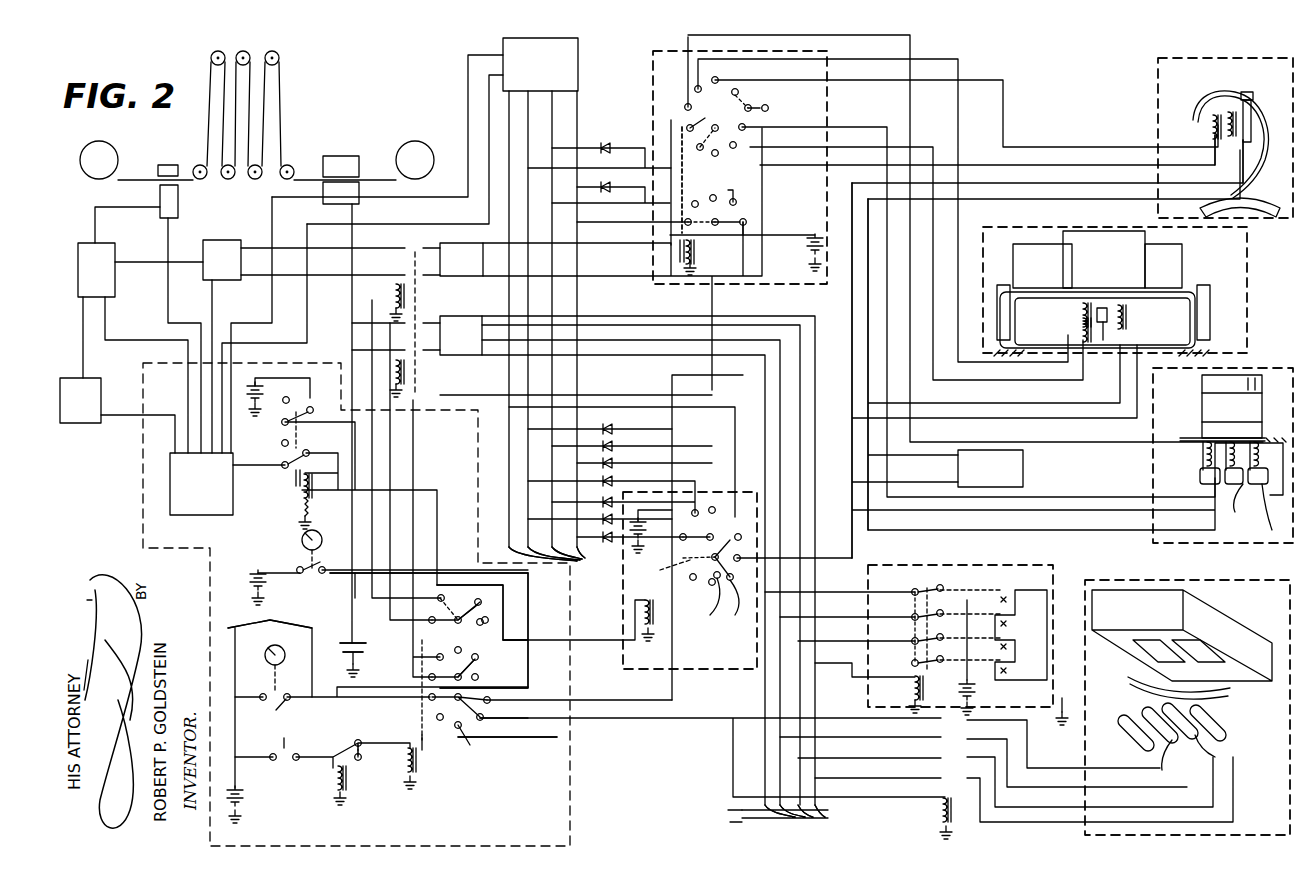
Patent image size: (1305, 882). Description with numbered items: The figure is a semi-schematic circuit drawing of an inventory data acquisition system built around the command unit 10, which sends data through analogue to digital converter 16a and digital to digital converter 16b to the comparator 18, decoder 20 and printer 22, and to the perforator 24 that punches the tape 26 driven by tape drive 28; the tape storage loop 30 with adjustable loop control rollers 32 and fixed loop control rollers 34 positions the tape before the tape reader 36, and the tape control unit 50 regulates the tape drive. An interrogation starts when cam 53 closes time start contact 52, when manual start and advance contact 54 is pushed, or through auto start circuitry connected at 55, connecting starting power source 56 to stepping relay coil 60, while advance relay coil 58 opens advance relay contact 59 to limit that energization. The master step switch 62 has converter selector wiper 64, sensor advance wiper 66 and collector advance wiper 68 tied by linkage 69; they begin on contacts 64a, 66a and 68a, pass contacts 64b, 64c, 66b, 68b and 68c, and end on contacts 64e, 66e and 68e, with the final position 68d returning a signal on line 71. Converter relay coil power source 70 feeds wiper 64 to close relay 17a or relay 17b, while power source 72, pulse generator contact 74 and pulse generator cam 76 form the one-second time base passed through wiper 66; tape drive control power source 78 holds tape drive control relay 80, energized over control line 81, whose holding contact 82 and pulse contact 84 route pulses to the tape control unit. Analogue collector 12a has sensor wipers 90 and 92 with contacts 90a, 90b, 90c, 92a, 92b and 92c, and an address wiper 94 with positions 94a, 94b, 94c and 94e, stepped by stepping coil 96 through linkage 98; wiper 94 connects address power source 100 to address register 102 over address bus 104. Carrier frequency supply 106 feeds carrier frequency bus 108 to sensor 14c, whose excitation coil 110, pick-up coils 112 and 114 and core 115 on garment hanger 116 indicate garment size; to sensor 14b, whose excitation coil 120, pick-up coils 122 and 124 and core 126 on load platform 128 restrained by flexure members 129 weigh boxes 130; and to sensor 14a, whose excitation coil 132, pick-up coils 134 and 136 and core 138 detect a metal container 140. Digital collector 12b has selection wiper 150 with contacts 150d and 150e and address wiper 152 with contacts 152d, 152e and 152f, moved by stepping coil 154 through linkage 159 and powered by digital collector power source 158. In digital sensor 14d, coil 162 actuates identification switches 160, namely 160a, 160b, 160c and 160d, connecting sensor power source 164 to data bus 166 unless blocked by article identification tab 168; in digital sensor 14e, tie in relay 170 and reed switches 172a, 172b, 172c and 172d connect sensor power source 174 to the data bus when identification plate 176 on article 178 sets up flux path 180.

The command unit 10 is at (143, 520).
The analogue collector 12a is at (662, 52).
The digital collector 12b is at (718, 670).
The analogue sensor 14a is at (1152, 492).
The analogue sensor 14b is at (1246, 309).
The analogue sensor 14c is at (1156, 108).
The digital sensor 14d is at (1053, 572).
The digital sensor 14e is at (1086, 835).
The analogue to digital converter 16a is at (463, 270).
The digital to digital converter 16b is at (463, 346).
The relay 17a is at (418, 296).
The relay 17b is at (418, 374).
The comparator 18 is at (227, 270).
The decoder 20 is at (102, 280).
The printer 22 is at (86, 410).
The perforator 24 is at (344, 156).
The punched tape 26 is at (360, 185).
The tape drive 28 is at (107, 169).
The tape storage loop 30 is at (296, 107).
The adjustable loop control rollers 32 is at (213, 52).
The fixed loop control rollers 34 is at (196, 165).
The tape reader 36 is at (178, 208).
The tape control unit 50 is at (206, 495).
The time start contact 52 is at (276, 708).
The cam 53 is at (266, 652).
The manual start and advance contact 54 is at (273, 751).
The auto start circuit connection 55 is at (246, 622).
The starting power source 56 is at (244, 800).
The advance relay coil 58 is at (349, 784).
The advance relay contact 59 is at (362, 758).
The stepping relay coil 60 is at (420, 770).
The master step switch 62 is at (512, 590).
The converter selector wiper 64 is at (473, 610).
The contact 64a is at (428, 622).
The contact 64b is at (437, 600).
The contact 64c is at (474, 573).
The contact 64e is at (490, 620).
The sensor advance wiper 66 is at (464, 666).
The contact 66a is at (428, 678).
The contact 66b is at (436, 658).
The contact 66e is at (480, 678).
The collector advance wiper 68 is at (458, 712).
The contact 68a is at (500, 704).
The contact 68b is at (500, 728).
The contact 68c is at (470, 744).
The contact 68d is at (436, 718).
The contact 68e is at (428, 700).
The linkage 69 is at (426, 748).
The converter relay coil power source 70 is at (342, 650).
The line 71 is at (545, 742).
The power source 72 is at (250, 580).
The pulse generator contact 74 is at (312, 574).
The pulse generator cam 76 is at (302, 538).
The tape drive control power source 78 is at (250, 392).
The tape drive control relay 80 is at (294, 478).
The control line 81 is at (358, 607).
The holding contact 82 is at (300, 408).
The pulse contact 84 is at (282, 450).
The sensor wiper 90 is at (740, 104).
The contact 90a is at (684, 107).
The contact 90b is at (694, 89).
The contact 90c is at (718, 78).
The sensor wiper 92 is at (703, 132).
The contact 92a is at (748, 126).
The contact 92b is at (740, 146).
The contact 92c is at (720, 160).
The address wiper 94 is at (735, 216).
The position 94a is at (686, 224).
The position 94b is at (692, 206).
The position 94c is at (724, 194).
The position 94e is at (748, 224).
The stepping coil 96 is at (676, 252).
The linkage 98 is at (670, 145).
The address power source 100 is at (800, 246).
The address register 102 is at (548, 74).
The address bus 104 is at (558, 559).
The carrier frequency supply 106 is at (996, 478).
The carrier frequency bus 108 is at (852, 288).
The excitation coil 110 is at (1270, 100).
The pick-up coil 112 is at (1210, 122).
The pick-up coil 114 is at (1215, 138).
The core 115 is at (1245, 143).
The garment hanger 116 is at (1262, 166).
The excitation coil 120 is at (1126, 316).
The pick-up coil 122 is at (1080, 308).
The pick-up coil 124 is at (1080, 326).
The core 126 is at (1110, 345).
The load platform 128 is at (1200, 292).
The flexure members 129 is at (1197, 312).
The boxes 130 is at (1047, 276).
The excitation coil 132 is at (1252, 502).
The pick-up coil 134 is at (1256, 512).
The pick-up coil 136 is at (1205, 458).
The core 138 is at (1202, 480).
The metal container 140 is at (1202, 408).
The selection wiper 150 is at (712, 571).
The contact 150d is at (735, 604).
The contact 150e is at (735, 590).
The address wiper 152 is at (704, 546).
The contact 152d is at (680, 537).
The contact 152e is at (692, 514).
The contact 152f is at (738, 534).
The stepping coil 154 is at (666, 634).
The digital collector power source 158 is at (634, 558).
The linkage 159 is at (660, 572).
The identification switches 160 is at (945, 584).
The identification switch 160a is at (936, 586).
The identification switch 160b is at (914, 614).
The identification switch 160c is at (914, 638).
The identification switch 160d is at (914, 660).
The coil 162 is at (912, 690).
The sensor power source 164 is at (978, 690).
The data bus 166 is at (770, 814).
The article identification tab 168 is at (1040, 664).
The tie in relay 170 is at (930, 812).
The reed switch 172a is at (1140, 748).
The reed switch 172b is at (1163, 745).
The reed switch 172c is at (1235, 758).
The reed switch 172d is at (1232, 714).
The sensor power source 174 is at (1058, 726).
The identification plate 176 is at (1192, 646).
The article 178 is at (1131, 621).
The flux path 180 is at (1170, 684).